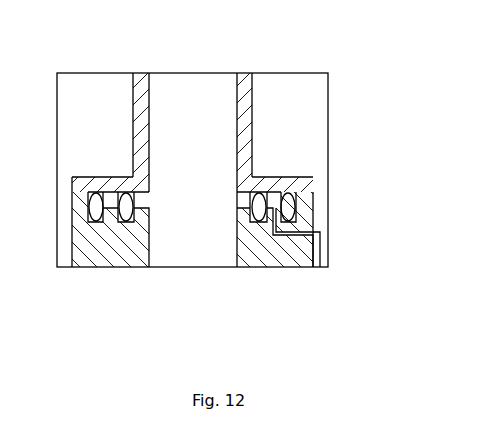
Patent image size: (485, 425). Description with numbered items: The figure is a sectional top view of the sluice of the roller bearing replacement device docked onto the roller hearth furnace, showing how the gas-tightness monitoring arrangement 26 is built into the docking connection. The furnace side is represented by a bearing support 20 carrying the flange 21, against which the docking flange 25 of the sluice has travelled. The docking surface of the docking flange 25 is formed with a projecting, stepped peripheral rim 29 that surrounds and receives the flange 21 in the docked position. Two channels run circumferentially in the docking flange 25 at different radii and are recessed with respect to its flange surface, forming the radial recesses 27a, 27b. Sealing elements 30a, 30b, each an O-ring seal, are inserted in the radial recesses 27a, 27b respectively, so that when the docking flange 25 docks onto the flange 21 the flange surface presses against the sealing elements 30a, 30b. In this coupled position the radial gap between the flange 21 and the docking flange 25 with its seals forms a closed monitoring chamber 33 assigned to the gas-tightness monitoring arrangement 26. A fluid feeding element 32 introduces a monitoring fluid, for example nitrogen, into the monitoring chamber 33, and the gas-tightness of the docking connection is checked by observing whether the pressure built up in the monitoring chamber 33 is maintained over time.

The bearing support 20 is at (132, 105).
The flange 21 is at (105, 176).
The docking flange 25 is at (298, 260).
The gas-tightness monitoring arrangement 26 is at (378, 282).
The radial recess 27a is at (99, 222).
The radial recess 27b is at (127, 222).
The peripheral rim 29 is at (310, 182).
The sealing element 30a is at (290, 200).
The sealing element 30b is at (98, 193).
The fluid feeding element 32 is at (317, 258).
The monitoring chamber 33 is at (290, 176).